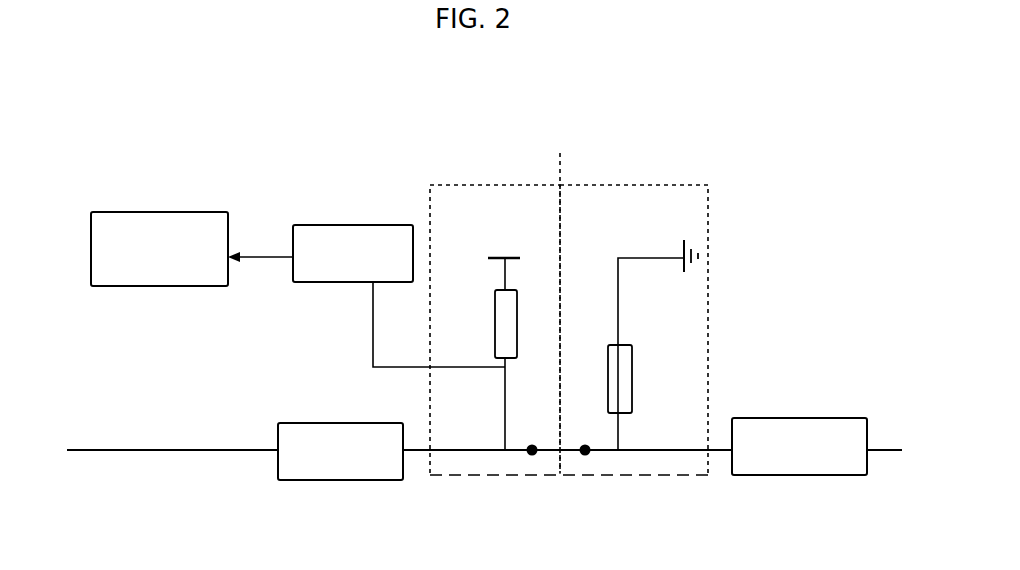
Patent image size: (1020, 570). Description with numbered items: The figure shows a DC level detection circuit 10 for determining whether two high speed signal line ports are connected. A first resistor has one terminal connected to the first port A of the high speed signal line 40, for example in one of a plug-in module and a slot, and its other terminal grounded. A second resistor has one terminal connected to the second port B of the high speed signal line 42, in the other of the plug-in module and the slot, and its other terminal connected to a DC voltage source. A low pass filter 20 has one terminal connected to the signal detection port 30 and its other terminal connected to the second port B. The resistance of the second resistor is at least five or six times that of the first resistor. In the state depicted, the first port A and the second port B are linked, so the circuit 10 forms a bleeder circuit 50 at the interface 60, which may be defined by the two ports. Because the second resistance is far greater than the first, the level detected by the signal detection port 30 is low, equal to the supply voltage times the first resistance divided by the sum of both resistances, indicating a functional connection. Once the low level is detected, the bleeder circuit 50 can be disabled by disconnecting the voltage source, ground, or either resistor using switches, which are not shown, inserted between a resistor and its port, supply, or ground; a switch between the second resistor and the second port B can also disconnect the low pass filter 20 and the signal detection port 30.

The DC level detection circuit 10 is at (403, 102).
The low pass filter 20 is at (362, 225).
The signal detection port 30 is at (173, 212).
The high speed signal line 40 is at (797, 475).
The high speed signal line 42 is at (323, 480).
The bleeder circuit 50 is at (612, 185).
The interface 60 is at (560, 172).
The first port A is at (635, 488).
The second port B is at (487, 493).